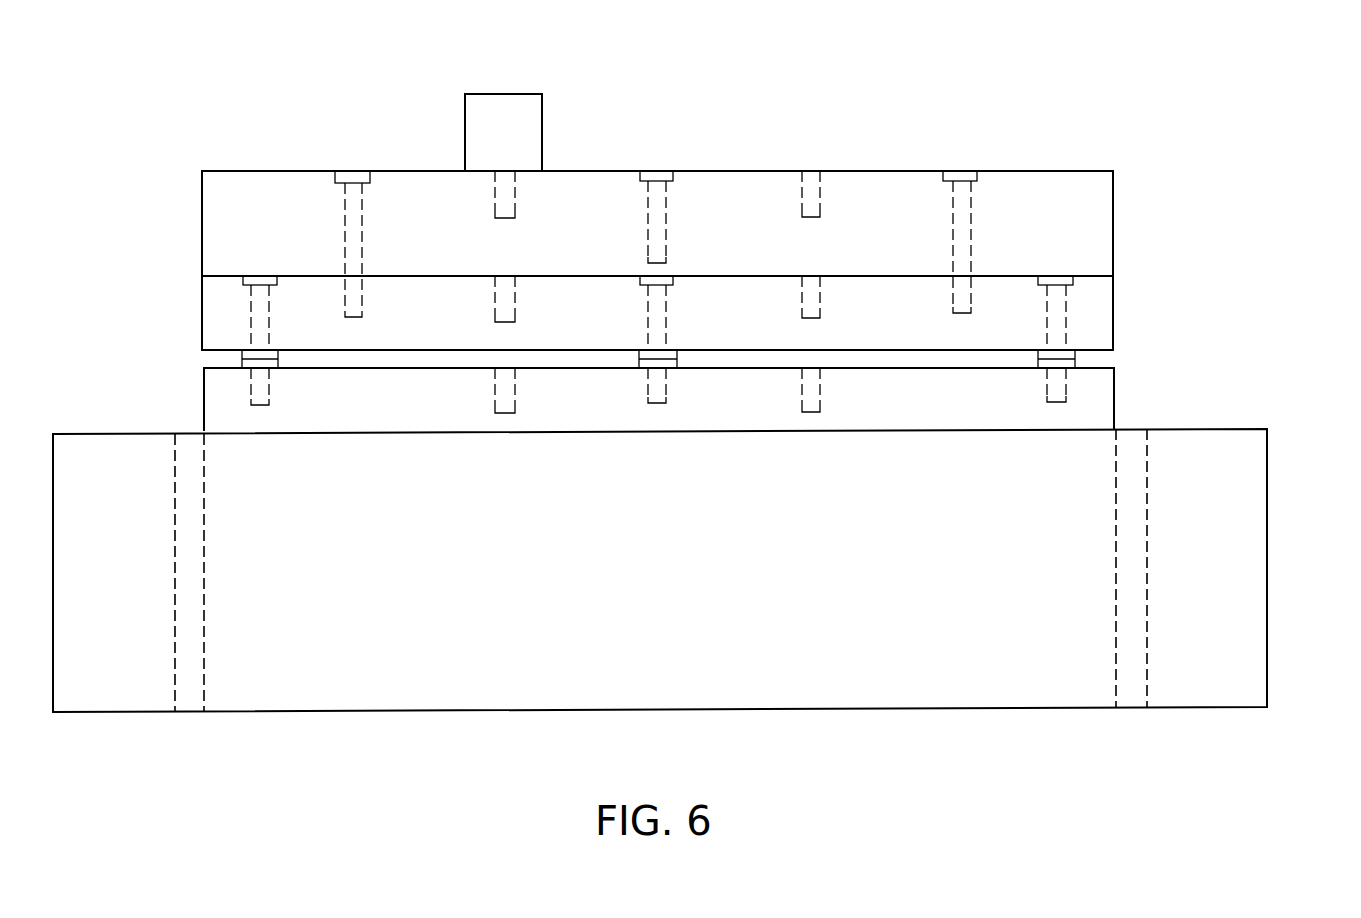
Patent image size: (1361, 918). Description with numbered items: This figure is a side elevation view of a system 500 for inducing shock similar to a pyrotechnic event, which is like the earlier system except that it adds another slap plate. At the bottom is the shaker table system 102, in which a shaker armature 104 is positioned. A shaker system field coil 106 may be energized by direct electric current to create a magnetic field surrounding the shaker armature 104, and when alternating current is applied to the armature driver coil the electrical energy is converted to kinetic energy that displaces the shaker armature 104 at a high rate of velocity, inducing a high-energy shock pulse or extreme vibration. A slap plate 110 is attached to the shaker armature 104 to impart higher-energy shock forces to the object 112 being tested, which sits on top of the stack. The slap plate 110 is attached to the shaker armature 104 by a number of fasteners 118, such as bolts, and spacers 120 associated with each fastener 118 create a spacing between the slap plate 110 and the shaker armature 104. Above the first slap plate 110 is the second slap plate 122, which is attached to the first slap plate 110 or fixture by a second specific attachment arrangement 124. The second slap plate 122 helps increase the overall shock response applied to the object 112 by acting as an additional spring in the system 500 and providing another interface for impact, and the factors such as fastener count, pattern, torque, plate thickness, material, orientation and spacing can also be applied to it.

The system for inducing shock 500 is at (1017, 112).
The shaker table system 102 is at (1267, 575).
The shaker armature 104 is at (1114, 398).
The shaker system field coil 106 is at (1255, 506).
The slap plate 110 is at (1113, 308).
The object 112 is at (542, 120).
The fastener 118 is at (269, 322).
The spacer 120 is at (1075, 360).
The second slap plate 122 is at (1113, 223).
The second specific attachment arrangement 124 is at (667, 164).